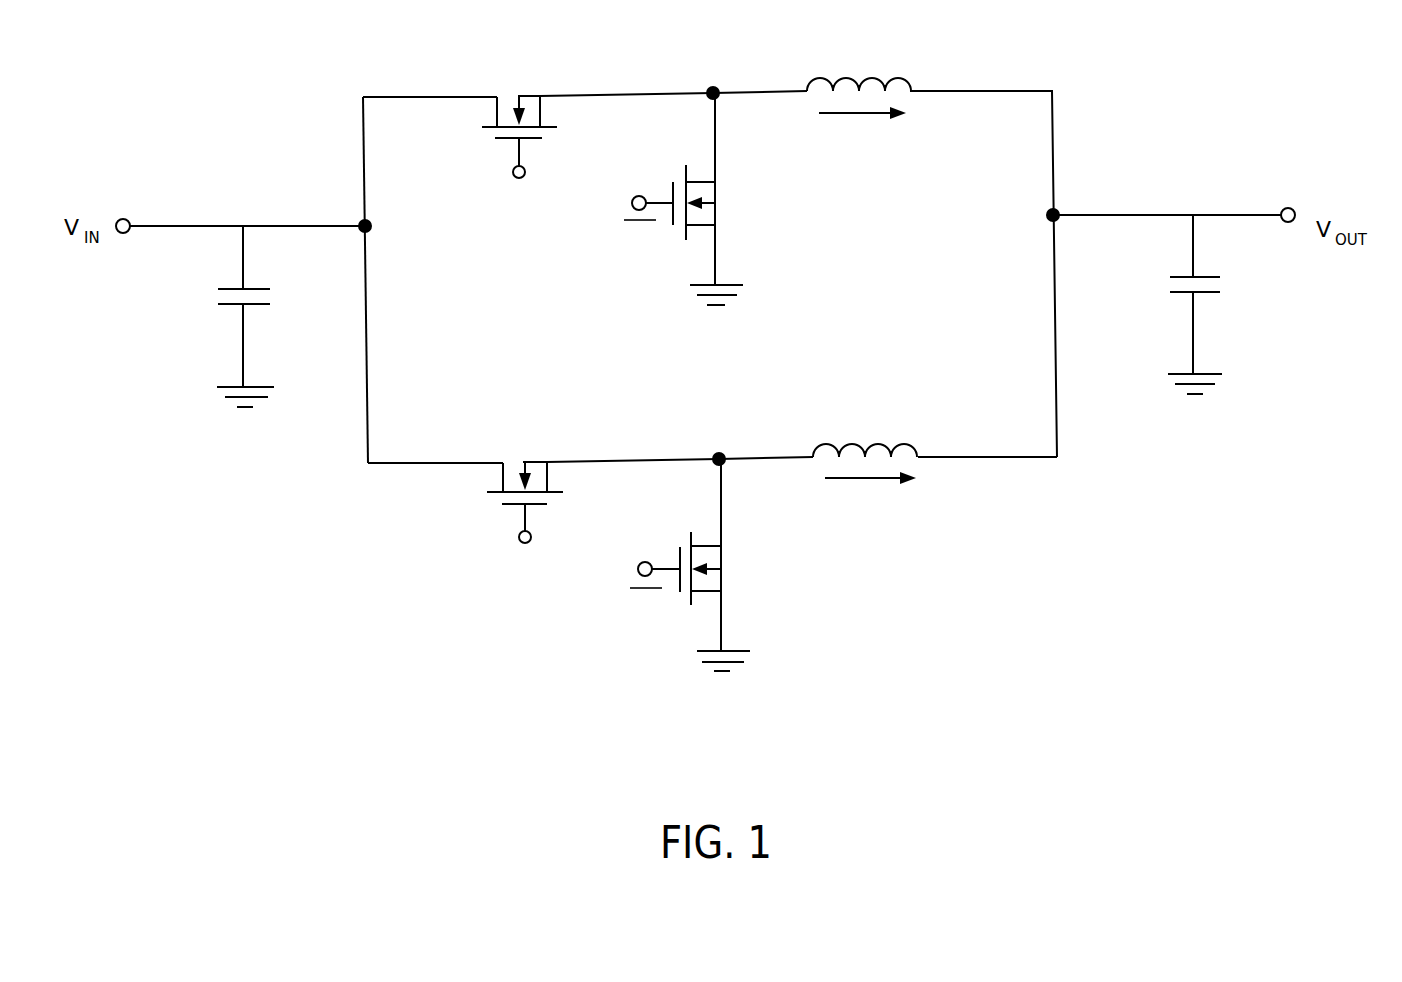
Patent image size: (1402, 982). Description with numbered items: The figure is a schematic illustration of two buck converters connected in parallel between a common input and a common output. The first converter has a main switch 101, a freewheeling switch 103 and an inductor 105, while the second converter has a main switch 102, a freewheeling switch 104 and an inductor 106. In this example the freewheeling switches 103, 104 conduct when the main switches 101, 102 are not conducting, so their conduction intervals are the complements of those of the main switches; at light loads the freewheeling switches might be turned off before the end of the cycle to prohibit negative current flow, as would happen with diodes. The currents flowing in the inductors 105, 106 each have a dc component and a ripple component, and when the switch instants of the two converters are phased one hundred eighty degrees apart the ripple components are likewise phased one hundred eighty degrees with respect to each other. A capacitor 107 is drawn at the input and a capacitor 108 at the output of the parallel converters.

The main switch 101 is at (527, 93).
The main switch 102 is at (537, 460).
The freewheeling switch 103 is at (736, 204).
The freewheeling switch 104 is at (723, 575).
The inductor 105 is at (870, 77).
The inductor 106 is at (874, 440).
The input capacitor 107 is at (236, 306).
The output capacitor 108 is at (1185, 295).